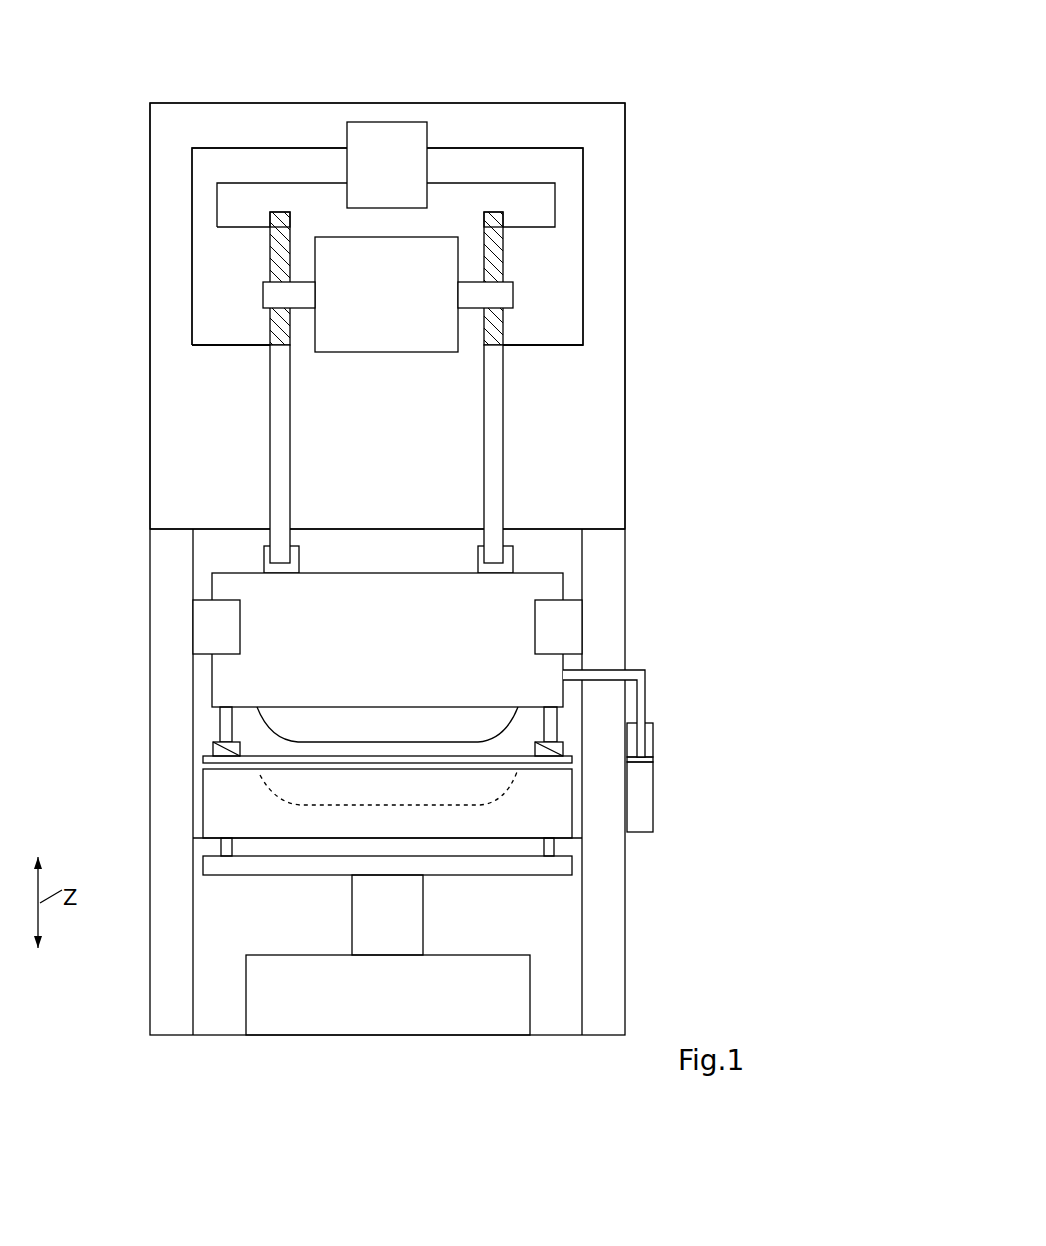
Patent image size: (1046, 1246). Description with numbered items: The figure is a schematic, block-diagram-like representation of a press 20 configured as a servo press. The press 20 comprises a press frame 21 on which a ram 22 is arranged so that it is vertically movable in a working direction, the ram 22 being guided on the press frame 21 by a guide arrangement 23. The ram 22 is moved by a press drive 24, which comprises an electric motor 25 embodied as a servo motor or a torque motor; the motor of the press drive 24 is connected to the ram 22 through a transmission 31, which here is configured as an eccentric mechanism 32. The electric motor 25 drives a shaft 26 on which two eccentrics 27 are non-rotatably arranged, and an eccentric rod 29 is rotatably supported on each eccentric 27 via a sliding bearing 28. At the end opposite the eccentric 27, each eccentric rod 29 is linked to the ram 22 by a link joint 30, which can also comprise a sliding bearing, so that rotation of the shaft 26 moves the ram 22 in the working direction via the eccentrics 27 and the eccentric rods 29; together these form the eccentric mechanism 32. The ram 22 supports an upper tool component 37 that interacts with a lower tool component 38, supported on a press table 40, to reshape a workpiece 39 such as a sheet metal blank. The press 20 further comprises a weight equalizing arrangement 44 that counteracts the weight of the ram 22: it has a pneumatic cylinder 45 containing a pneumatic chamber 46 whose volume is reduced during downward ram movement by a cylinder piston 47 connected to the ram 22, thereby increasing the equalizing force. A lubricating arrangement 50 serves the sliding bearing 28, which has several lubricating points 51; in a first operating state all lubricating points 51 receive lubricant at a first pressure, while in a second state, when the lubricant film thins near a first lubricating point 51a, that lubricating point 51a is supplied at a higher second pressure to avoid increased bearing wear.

The press 20 is at (667, 58).
The press frame 21 is at (627, 441).
The ram 22 is at (230, 692).
The guide arrangement 23 is at (190, 617).
The press drive 24 is at (235, 383).
The electric motor 25 is at (365, 340).
The shaft 26 is at (266, 292).
The eccentric 27 is at (274, 262).
The sliding bearing 28 is at (283, 238).
The eccentric rod 29 is at (274, 458).
The link joint 30 is at (282, 578).
The transmission 31 is at (557, 306).
The eccentric mechanism 32 is at (557, 306).
The upper tool component 37 is at (272, 720).
The lower tool component 38 is at (207, 803).
The workpiece 39 is at (206, 762).
The press table 40 is at (310, 895).
The weight equalizing arrangement 44 is at (650, 713).
The pneumatic cylinder 45 is at (652, 738).
The pneumatic chamber 46 is at (645, 795).
The cylinder piston 47 is at (646, 767).
The lubricating arrangement 50 is at (355, 128).
The lubricating point 51 is at (268, 228).
The first lubricating point 51a is at (268, 346).